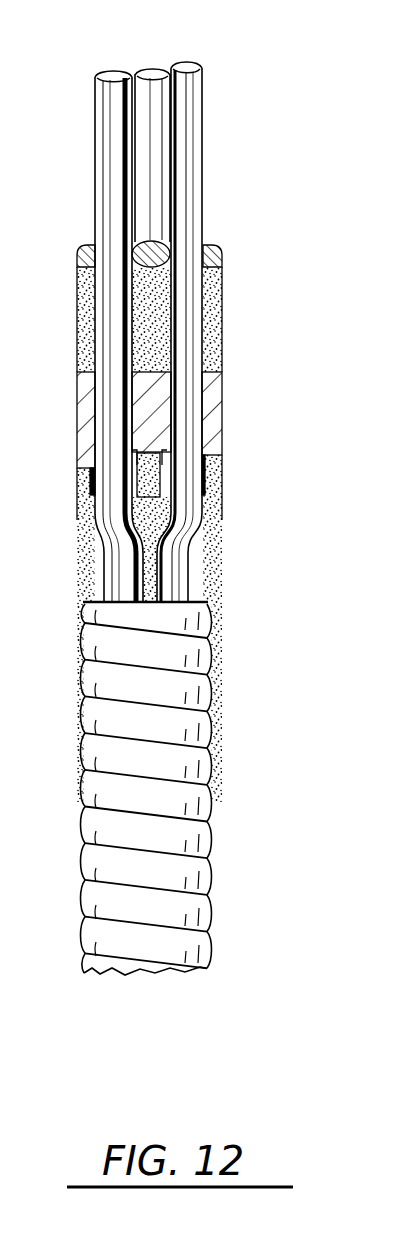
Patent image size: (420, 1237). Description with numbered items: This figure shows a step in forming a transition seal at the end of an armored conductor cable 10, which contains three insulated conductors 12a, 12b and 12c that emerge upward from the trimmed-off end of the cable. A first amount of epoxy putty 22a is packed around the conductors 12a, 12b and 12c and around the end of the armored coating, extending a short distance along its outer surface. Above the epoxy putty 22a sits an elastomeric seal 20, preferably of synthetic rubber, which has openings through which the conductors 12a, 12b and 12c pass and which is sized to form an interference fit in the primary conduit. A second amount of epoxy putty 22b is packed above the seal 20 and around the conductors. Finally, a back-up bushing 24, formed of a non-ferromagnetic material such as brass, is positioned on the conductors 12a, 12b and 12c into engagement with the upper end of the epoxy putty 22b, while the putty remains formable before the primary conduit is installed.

The conductor cable 10 is at (217, 907).
The insulated conductor 12a is at (95, 146).
The insulated conductor 12b is at (152, 70).
The insulated conductor 12c is at (205, 108).
The elastomeric seal 20 is at (223, 415).
The epoxy putty 22a is at (217, 547).
The epoxy putty 22b is at (223, 318).
The back-up bushing 24 is at (223, 247).